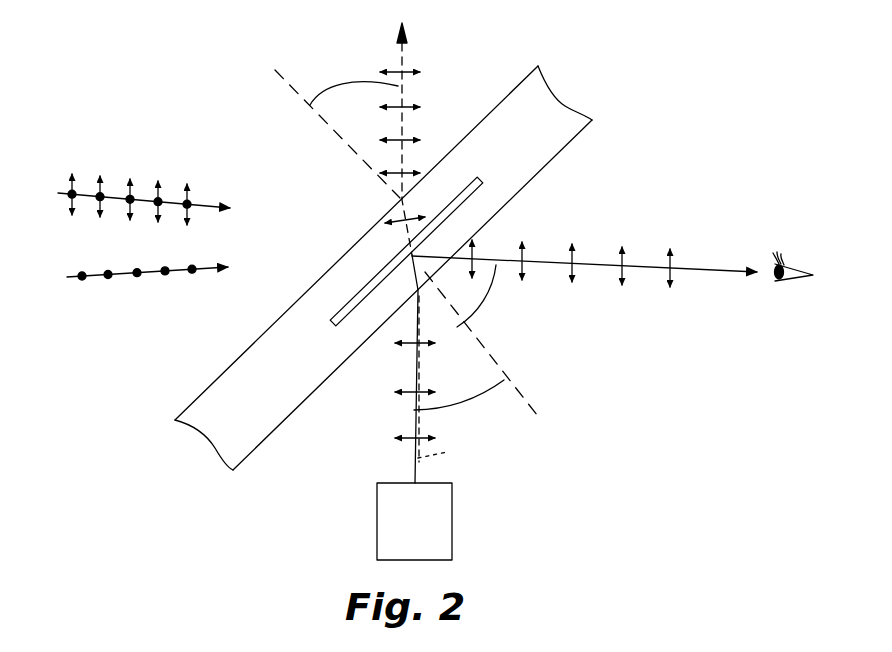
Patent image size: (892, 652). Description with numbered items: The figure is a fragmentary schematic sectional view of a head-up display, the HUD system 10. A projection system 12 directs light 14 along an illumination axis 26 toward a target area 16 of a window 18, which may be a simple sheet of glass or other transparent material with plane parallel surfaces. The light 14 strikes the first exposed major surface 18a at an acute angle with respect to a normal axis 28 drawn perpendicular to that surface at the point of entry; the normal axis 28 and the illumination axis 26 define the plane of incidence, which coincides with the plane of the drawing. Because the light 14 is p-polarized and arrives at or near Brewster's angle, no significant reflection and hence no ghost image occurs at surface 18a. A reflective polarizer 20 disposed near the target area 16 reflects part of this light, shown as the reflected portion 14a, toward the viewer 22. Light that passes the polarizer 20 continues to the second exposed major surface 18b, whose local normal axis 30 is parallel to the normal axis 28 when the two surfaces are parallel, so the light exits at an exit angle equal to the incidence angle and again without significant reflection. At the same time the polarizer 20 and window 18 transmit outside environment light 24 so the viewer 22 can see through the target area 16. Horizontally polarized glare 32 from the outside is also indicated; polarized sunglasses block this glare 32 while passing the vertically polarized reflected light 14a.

The HUD system 10 is at (672, 159).
The projection system 12 is at (428, 533).
The light 14 is at (412, 470).
The reflected light portion 14a is at (642, 271).
The target area 16 is at (440, 146).
The window 18 is at (548, 82).
The first exposed major surface 18a is at (531, 188).
The second exposed major surface 18b is at (193, 396).
The reflective polarizer 20 is at (471, 177).
The viewer 22 is at (793, 288).
The outside environment light 24 is at (147, 200).
The illumination axis 26 is at (449, 458).
The normal axis 28 is at (546, 394).
The local normal axis 30 is at (297, 88).
The glare 32 is at (120, 273).